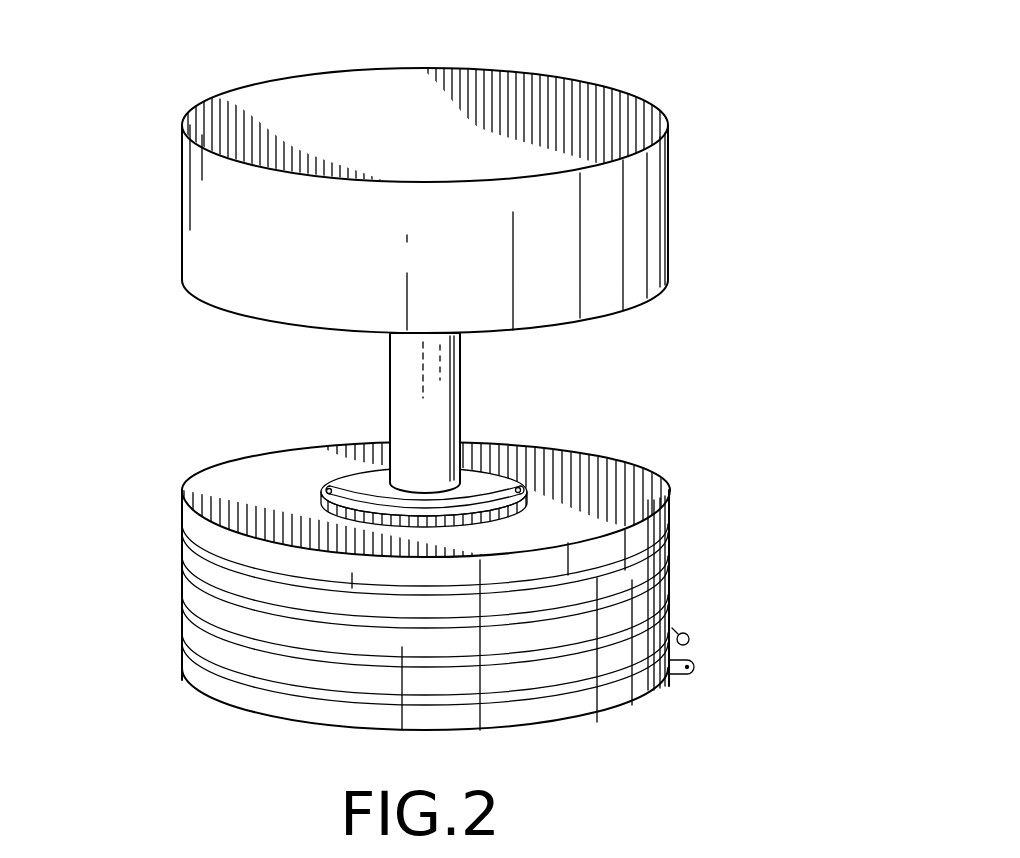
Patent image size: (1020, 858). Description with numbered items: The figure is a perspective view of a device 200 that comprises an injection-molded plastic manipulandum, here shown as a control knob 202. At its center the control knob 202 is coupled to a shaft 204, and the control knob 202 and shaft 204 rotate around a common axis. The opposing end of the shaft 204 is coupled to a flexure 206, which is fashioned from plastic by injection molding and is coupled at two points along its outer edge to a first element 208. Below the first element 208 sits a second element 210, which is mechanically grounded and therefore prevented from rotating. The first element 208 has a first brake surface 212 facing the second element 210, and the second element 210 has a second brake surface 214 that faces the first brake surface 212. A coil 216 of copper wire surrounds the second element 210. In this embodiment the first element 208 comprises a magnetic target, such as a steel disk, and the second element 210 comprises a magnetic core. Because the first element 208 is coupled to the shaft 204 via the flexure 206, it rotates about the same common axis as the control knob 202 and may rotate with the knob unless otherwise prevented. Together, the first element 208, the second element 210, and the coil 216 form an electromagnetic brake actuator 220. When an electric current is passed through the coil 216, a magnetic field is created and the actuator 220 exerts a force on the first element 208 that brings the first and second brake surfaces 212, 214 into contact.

The device 200 is at (473, 365).
The control knob 202 is at (597, 83).
The shaft 204 is at (432, 408).
The flexure 206 is at (362, 481).
The first element 208 is at (183, 524).
The second element 210 is at (672, 594).
The first brake surface 212 is at (648, 565).
The second brake surface 214 is at (662, 572).
The coil 216 is at (693, 669).
The electromagnetic brake actuator 220 is at (422, 581).